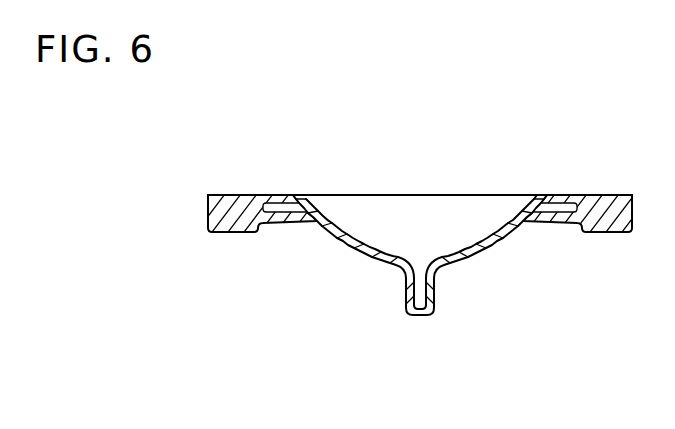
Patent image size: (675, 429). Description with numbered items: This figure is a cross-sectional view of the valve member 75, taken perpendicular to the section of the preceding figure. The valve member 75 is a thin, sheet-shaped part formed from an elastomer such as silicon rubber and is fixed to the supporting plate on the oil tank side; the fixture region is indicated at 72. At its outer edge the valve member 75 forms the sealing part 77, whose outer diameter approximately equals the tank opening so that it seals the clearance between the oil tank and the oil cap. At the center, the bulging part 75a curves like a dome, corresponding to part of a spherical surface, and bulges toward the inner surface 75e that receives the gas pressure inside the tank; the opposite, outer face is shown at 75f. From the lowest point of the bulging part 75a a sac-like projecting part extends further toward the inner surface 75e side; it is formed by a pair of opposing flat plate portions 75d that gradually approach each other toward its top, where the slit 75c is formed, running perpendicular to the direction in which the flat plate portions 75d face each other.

The fixing jig 72 is at (523, 153).
The sealing part 77 is at (218, 208).
The valve member 75 is at (420, 302).
The bulging part 75a is at (518, 238).
The slit 75c is at (423, 317).
The flat plate portions 75d is at (404, 290).
The inner surface 75e is at (502, 248).
The diaphragm outer surface 75f is at (352, 242).